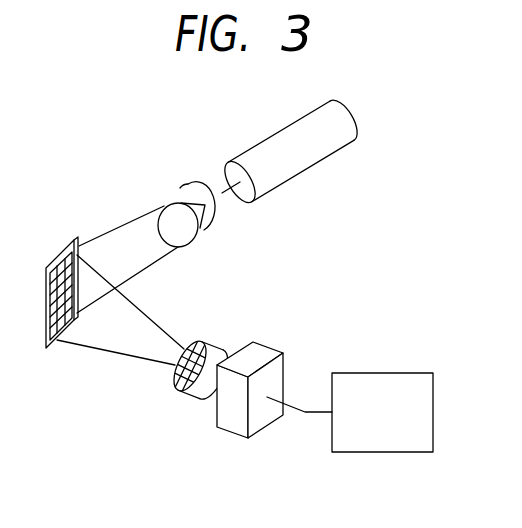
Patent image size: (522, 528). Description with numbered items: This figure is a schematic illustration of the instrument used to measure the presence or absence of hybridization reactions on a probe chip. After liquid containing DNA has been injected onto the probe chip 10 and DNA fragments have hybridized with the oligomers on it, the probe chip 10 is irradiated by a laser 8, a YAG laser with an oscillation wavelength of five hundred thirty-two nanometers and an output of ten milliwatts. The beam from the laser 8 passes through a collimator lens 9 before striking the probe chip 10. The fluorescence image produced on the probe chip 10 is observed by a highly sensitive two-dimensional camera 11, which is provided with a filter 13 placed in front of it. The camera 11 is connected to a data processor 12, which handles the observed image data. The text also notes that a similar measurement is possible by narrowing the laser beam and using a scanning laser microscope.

The laser 8 is at (308, 153).
The collimator lens 9 is at (170, 198).
The probe chip 10 is at (62, 253).
The highly sensitive 2-dimensional camera 11 is at (222, 352).
The data processor 12 is at (395, 372).
The filter 13 is at (200, 338).